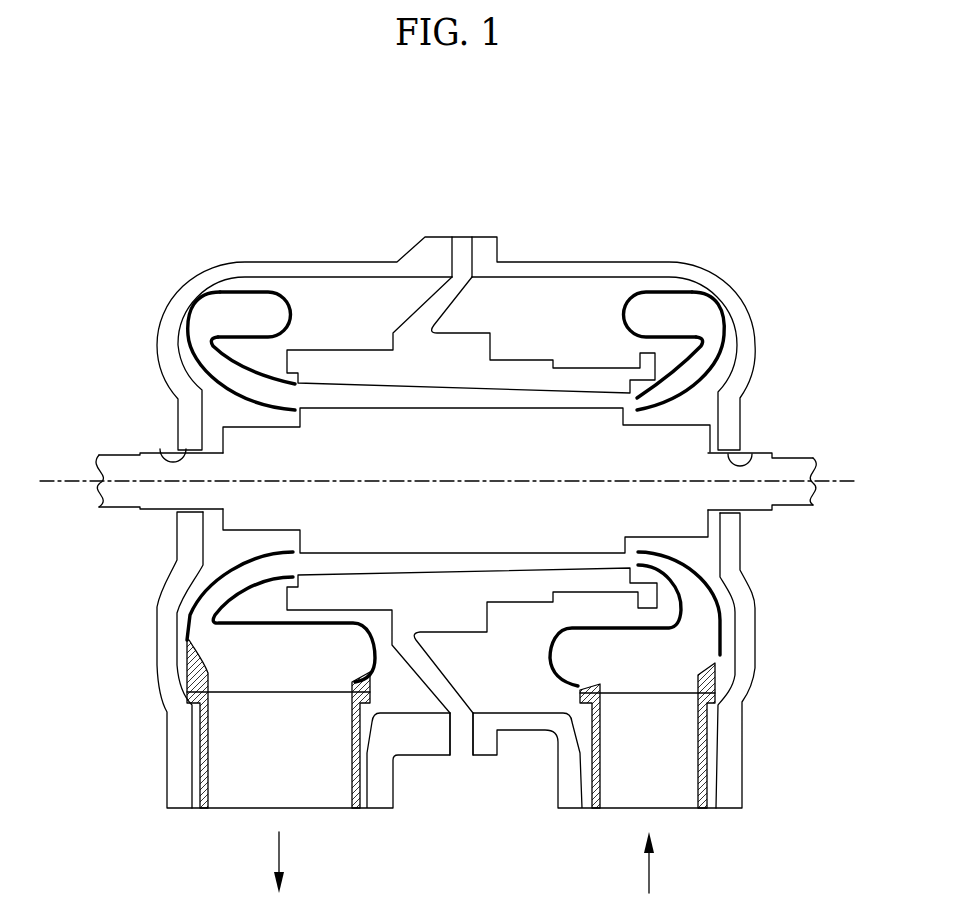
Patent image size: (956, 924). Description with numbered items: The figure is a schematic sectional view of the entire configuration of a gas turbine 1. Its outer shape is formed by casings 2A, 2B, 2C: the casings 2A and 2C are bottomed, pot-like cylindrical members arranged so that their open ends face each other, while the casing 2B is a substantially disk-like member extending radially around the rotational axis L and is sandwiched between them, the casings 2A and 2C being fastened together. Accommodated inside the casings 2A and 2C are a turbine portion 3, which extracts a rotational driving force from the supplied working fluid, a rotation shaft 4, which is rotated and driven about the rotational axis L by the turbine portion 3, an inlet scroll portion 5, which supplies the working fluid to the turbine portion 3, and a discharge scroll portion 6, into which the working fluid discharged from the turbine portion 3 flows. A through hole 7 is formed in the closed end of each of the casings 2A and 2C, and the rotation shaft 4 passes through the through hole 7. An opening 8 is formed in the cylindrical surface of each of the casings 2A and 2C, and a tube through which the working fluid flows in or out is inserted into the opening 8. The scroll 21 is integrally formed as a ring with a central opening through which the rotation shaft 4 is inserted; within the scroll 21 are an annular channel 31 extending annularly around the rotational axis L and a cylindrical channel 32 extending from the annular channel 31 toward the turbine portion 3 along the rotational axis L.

The gas turbine 1 is at (172, 158).
The casing 2A is at (570, 262).
The casing 2B is at (460, 237).
The casing 2C is at (363, 262).
The turbine portion 3 is at (534, 359).
The rotation shaft 4 is at (800, 498).
The inlet scroll portion 5 is at (698, 282).
The discharge scroll portion 6 is at (204, 282).
The through hole 7 is at (160, 452).
The opening 8 is at (192, 782).
The scroll 21 is at (188, 620).
The annular channel 31 is at (248, 302).
The cylindrical channel 32 is at (228, 373).
The rotational axis L is at (77, 481).